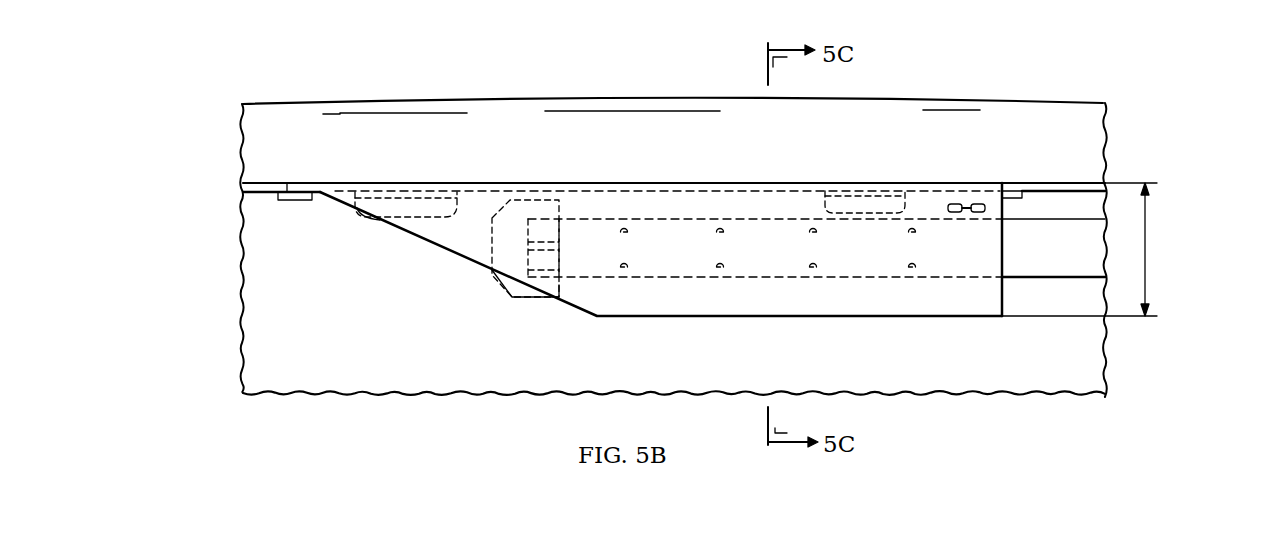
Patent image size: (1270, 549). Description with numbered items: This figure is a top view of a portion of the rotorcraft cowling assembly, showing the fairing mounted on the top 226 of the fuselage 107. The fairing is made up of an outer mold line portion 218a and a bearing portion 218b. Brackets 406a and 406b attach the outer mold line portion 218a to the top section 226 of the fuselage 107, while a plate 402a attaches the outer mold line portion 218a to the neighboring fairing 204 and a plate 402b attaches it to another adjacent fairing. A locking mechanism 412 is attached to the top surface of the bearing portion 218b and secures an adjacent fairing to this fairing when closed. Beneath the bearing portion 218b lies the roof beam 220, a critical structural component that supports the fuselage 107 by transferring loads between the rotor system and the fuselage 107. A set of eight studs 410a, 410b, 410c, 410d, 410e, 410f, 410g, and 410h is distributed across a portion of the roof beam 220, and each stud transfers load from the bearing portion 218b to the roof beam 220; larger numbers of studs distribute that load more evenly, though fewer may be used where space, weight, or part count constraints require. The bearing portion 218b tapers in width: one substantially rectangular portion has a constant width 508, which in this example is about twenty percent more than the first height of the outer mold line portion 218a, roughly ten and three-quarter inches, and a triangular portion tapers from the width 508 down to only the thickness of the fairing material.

The fuselage 107 is at (507, 110).
The fairing 204 is at (263, 188).
The outer mold line portion 218a is at (772, 178).
The bearing portion 218b is at (765, 315).
The roof beam 220 is at (1053, 265).
The top of the fuselage 226 is at (253, 340).
The plate 402a is at (292, 200).
The plate 402b is at (1015, 190).
The bracket 406a is at (412, 218).
The bracket 406b is at (870, 191).
The stud 410a is at (624, 219).
The stud 410b is at (624, 278).
The stud 410c is at (720, 219).
The stud 410d is at (720, 278).
The stud 410e is at (813, 219).
The stud 410f is at (813, 278).
The stud 410g is at (912, 219).
The stud 410h is at (912, 278).
The locking mechanism 412 is at (972, 203).
The width 508 is at (1147, 248).